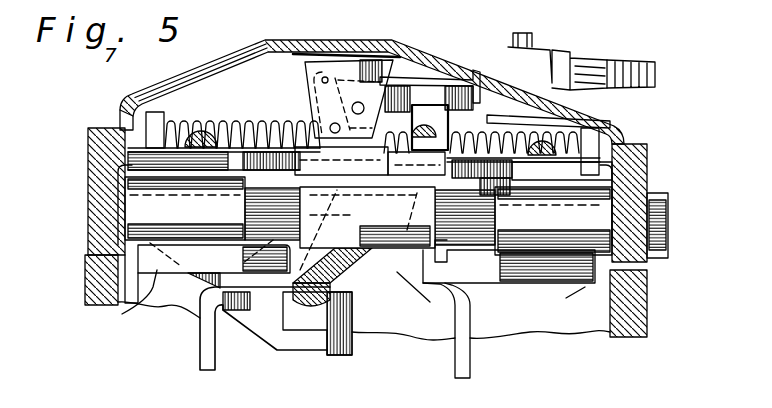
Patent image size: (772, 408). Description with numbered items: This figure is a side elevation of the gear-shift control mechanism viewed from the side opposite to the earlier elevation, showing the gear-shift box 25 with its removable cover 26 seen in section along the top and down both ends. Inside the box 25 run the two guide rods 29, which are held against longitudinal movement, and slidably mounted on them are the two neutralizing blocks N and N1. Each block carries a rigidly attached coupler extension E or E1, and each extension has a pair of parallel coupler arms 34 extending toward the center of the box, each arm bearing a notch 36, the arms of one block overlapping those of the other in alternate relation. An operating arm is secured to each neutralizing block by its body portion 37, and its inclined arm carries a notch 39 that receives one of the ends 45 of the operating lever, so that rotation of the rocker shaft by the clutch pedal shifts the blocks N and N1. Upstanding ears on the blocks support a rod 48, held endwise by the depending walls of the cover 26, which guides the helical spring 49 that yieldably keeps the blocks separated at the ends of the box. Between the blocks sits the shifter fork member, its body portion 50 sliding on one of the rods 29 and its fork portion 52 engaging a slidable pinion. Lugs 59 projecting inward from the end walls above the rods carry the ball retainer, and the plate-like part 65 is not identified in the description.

The gear-shift box 25 is at (88, 157).
The removable cover 26 is at (124, 100).
The guide rods 29 is at (447, 250).
The coupler arms 34 is at (237, 249).
The notch 36 is at (509, 130).
The body portion 37 is at (163, 118).
The notch 39 is at (420, 105).
The lever ends 45 is at (440, 128).
The rod 48 is at (246, 137).
The helical spring 49 is at (253, 141).
The body portion 50 is at (370, 208).
The fork portion 52 is at (213, 352).
The lugs 59 is at (118, 201).
The mounting plate 65 is at (308, 66).
The neutralizing block N is at (185, 208).
The neutralizing block N1 is at (581, 222).
The coupler extension E is at (130, 306).
The coupler extension E1 is at (557, 301).